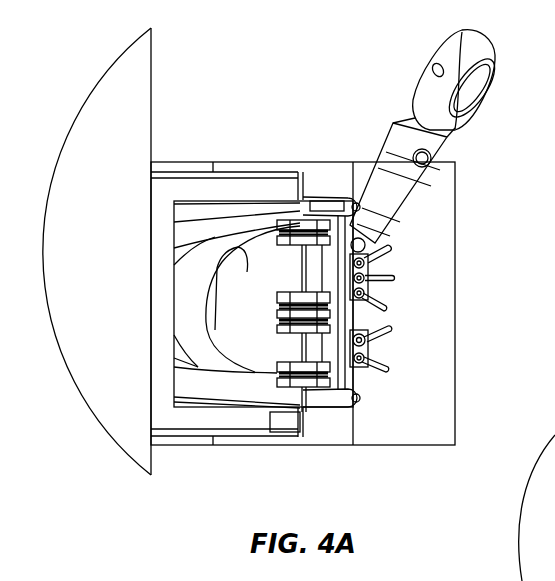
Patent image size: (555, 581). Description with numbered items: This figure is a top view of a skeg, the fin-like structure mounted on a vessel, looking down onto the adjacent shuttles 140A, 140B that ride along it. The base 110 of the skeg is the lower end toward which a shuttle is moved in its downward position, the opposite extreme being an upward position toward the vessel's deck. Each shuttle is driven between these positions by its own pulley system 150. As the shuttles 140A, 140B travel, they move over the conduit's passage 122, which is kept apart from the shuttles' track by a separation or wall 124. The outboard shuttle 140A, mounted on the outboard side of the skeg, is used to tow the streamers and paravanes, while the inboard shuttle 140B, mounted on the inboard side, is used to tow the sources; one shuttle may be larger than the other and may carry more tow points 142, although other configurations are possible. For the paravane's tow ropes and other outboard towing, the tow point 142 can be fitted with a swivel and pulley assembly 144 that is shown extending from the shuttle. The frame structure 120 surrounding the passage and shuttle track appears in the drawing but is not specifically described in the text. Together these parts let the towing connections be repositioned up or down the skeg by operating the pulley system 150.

The base 110 is at (412, 446).
The frame 120 is at (290, 446).
The passage 122 is at (238, 262).
The wall 124 is at (297, 347).
The outboard shuttle 140A is at (400, 264).
The inboard shuttle 140B is at (392, 351).
The tow point 142 is at (390, 310).
The swivel and pulley assembly 144 is at (412, 88).
The pulley system 150 is at (303, 200).